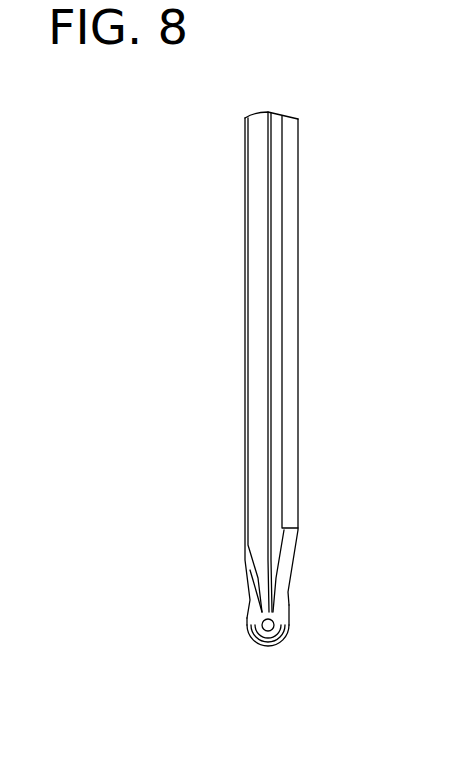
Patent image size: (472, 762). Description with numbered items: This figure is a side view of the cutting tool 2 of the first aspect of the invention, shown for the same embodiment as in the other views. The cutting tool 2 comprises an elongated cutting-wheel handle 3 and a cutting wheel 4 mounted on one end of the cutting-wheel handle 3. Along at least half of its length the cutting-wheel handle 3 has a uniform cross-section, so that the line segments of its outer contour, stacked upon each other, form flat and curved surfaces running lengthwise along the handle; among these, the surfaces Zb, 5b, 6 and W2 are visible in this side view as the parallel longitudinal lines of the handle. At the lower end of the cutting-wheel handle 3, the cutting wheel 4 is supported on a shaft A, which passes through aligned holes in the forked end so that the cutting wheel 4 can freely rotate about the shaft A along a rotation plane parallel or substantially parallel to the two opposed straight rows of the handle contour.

The cutting tool 2 is at (200, 195).
The cutting-wheel handle 3 is at (312, 446).
The cutting wheel 4 is at (255, 645).
The surface 5b is at (290, 258).
The surface 6 is at (245, 337).
The surface W2 is at (274, 207).
The surface Zb is at (259, 378).
The shaft A is at (270, 625).